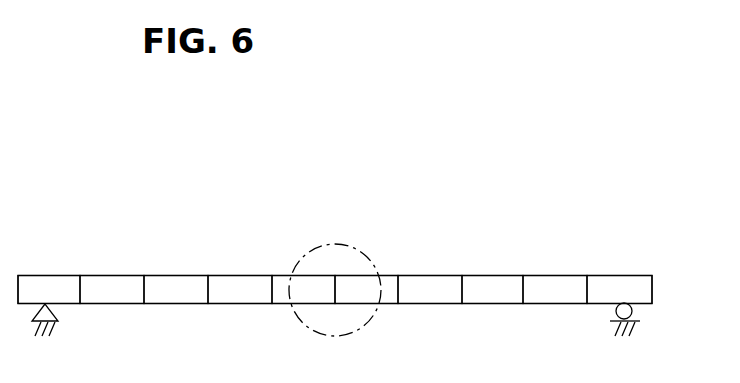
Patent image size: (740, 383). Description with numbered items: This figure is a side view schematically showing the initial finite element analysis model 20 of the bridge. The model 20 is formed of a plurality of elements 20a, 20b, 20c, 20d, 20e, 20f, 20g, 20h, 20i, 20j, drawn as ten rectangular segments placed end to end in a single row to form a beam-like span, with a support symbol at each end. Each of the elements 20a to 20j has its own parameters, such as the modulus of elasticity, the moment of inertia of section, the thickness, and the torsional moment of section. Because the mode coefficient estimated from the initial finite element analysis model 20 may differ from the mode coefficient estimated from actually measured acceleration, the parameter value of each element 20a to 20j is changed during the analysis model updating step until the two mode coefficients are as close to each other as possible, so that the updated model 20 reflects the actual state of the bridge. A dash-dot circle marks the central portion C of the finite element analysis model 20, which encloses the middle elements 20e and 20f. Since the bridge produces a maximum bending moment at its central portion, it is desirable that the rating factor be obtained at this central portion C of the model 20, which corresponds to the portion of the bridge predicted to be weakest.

The initial finite element analysis model 20 is at (632, 184).
The element 20a is at (48, 282).
The element 20b is at (112, 282).
The element 20c is at (176, 282).
The element 20d is at (240, 282).
The element 20e is at (301, 298).
The element 20f is at (365, 298).
The element 20g is at (428, 298).
The element 20h is at (492, 298).
The element 20i is at (556, 298).
The element 20j is at (619, 282).
The central portion C is at (338, 242).